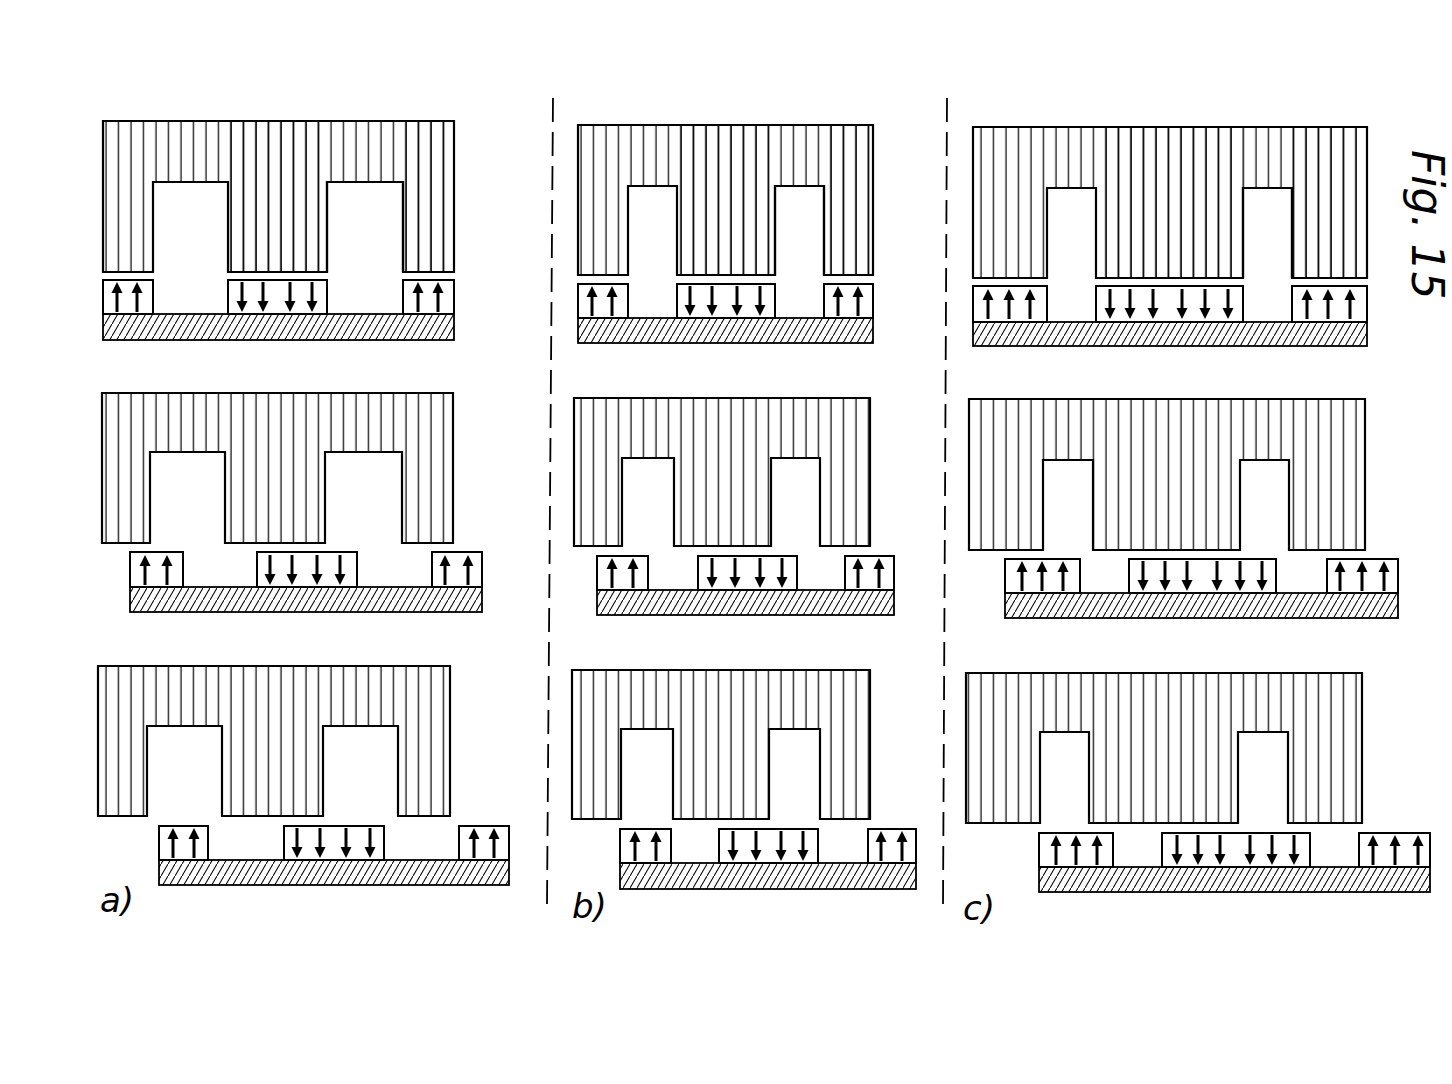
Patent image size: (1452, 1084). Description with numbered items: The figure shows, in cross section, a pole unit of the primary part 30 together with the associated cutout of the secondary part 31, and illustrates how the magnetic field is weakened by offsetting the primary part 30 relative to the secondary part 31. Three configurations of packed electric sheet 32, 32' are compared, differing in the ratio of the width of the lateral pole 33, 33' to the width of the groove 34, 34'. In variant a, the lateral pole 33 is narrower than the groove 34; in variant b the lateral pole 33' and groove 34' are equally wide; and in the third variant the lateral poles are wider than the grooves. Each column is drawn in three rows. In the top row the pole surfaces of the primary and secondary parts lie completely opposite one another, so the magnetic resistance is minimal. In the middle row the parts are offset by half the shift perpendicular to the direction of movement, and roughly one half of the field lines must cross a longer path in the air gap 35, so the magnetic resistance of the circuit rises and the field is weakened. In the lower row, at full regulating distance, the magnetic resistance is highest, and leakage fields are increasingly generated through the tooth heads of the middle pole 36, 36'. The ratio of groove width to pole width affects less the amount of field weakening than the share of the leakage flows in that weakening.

The primary part 30 is at (1368, 707).
The secondary part 31 is at (1386, 822).
The packed electric sheet 32 is at (318, 168).
The packed electric sheet 32' is at (764, 170).
The lateral pole 33 is at (468, 170).
The lateral pole 33' is at (891, 173).
The groove 34 is at (382, 168).
The groove 34' is at (827, 170).
The air gap 35 is at (452, 278).
The middle pole 36 is at (289, 168).
The middle pole 36' is at (743, 171).